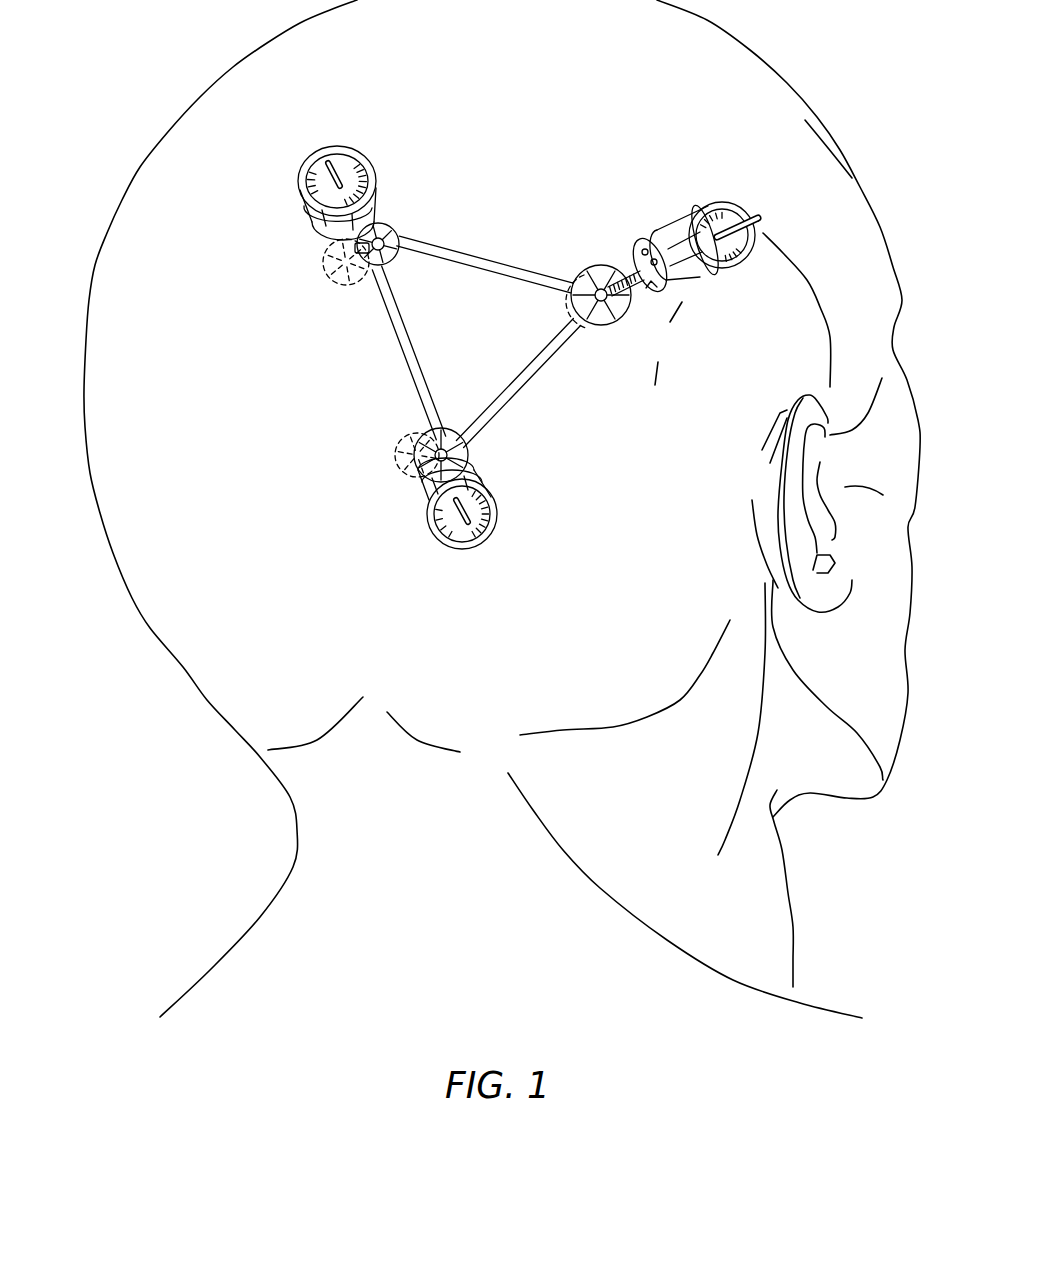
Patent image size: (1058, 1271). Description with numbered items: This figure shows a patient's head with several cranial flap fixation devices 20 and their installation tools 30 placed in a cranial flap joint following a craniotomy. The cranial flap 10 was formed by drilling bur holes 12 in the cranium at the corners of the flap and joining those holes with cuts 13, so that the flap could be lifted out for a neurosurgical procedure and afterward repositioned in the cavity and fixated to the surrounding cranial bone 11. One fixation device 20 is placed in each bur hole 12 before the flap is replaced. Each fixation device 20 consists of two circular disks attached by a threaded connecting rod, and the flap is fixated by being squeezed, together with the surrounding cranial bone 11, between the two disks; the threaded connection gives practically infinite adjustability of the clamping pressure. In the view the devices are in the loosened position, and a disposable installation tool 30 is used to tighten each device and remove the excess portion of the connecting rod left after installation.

The cranial flap 10 is at (511, 354).
The surrounding cranial bone 11 is at (532, 131).
The bur holes 12 is at (391, 223).
The cuts 13 is at (492, 258).
The cranial flap fixation device 20 is at (325, 282).
The installation tool 30 is at (307, 130).